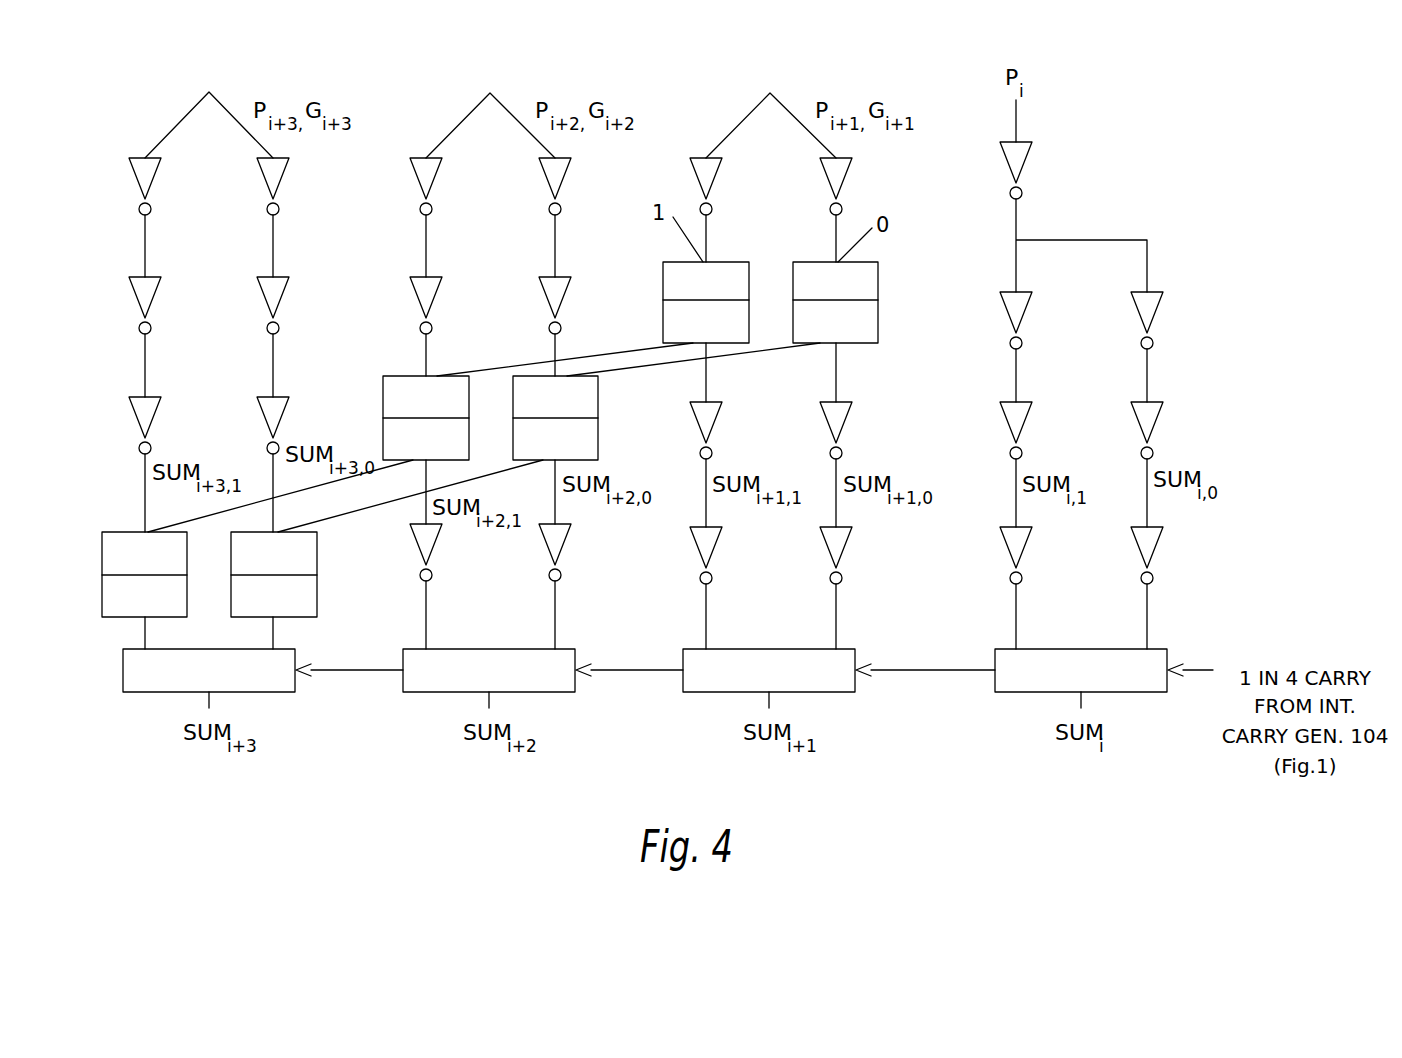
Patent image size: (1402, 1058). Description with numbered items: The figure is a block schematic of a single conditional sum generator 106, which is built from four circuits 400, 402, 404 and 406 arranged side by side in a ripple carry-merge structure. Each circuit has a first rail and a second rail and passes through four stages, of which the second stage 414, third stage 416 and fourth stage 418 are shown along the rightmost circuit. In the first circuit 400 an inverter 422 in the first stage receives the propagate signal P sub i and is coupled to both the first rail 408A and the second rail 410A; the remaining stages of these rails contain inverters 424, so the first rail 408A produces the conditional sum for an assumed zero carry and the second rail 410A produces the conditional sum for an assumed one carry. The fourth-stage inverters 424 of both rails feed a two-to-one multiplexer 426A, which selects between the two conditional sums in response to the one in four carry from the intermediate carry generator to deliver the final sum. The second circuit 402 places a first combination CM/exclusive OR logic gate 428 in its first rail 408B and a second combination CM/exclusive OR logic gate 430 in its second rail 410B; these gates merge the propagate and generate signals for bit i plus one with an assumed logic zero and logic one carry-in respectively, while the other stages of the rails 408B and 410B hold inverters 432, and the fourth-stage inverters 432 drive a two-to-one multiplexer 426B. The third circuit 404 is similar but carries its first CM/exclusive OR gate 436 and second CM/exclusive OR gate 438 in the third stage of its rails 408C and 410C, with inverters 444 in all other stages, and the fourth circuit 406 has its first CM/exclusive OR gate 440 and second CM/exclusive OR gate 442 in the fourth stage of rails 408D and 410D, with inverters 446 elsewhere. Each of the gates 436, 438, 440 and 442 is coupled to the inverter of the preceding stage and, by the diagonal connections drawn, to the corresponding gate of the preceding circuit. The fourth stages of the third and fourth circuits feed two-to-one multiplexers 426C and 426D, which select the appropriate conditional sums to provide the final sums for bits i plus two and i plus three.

The conditional sum generator 106 is at (1214, 157).
The first circuit 400 is at (1056, 132).
The second circuit 402 is at (759, 99).
The third circuit 404 is at (479, 99).
The fourth circuit 406 is at (197, 99).
The first rail 408A is at (1148, 378).
The first rail 408B is at (837, 360).
The first rail 408C is at (556, 252).
The first rail 408D is at (274, 247).
The second rail 410A is at (1017, 378).
The second rail 410B is at (707, 378).
The second rail 410C is at (427, 247).
The second rail 410D is at (147, 247).
The second stage 414 is at (1173, 300).
The third stage 416 is at (1173, 410).
The fourth stage 418 is at (1173, 555).
The inverter 422 is at (1010, 142).
The inverter 424 is at (1008, 318).
The 2:1 multiplexer 426A is at (1130, 692).
The 2:1 multiplexer 426B is at (818, 692).
The 2:1 multiplexer 426C is at (538, 692).
The 2:1 multiplexer 426D is at (258, 692).
The first combination CM/exclusive OR logic gate 428 is at (806, 262).
The second combination CM/exclusive OR logic gate 430 is at (676, 262).
The inverter 432 is at (694, 183).
The first CM/exclusive OR gate 436 is at (598, 393).
The second CM/exclusive OR gate 438 is at (396, 376).
The first CM/exclusive OR gate 440 is at (318, 557).
The second CM/exclusive OR gate 442 is at (122, 531).
The inverter 444 is at (414, 183).
The inverter 446 is at (133, 183).